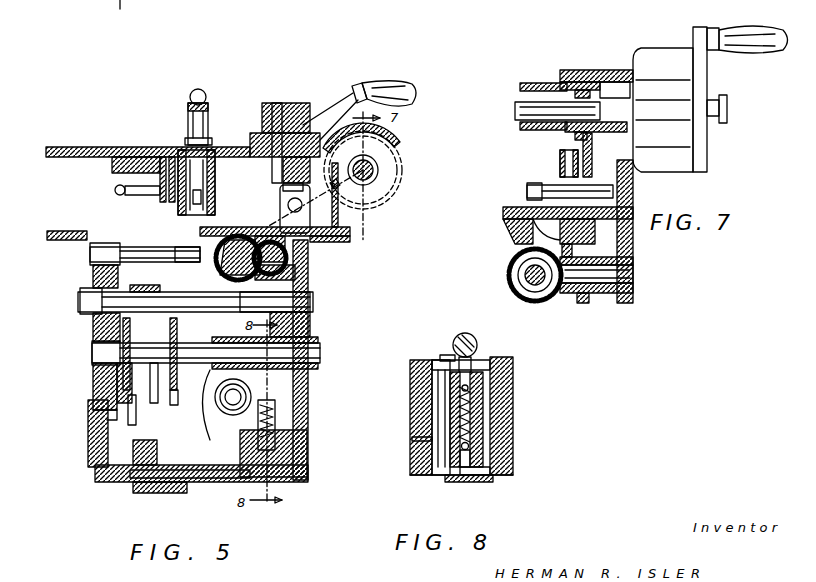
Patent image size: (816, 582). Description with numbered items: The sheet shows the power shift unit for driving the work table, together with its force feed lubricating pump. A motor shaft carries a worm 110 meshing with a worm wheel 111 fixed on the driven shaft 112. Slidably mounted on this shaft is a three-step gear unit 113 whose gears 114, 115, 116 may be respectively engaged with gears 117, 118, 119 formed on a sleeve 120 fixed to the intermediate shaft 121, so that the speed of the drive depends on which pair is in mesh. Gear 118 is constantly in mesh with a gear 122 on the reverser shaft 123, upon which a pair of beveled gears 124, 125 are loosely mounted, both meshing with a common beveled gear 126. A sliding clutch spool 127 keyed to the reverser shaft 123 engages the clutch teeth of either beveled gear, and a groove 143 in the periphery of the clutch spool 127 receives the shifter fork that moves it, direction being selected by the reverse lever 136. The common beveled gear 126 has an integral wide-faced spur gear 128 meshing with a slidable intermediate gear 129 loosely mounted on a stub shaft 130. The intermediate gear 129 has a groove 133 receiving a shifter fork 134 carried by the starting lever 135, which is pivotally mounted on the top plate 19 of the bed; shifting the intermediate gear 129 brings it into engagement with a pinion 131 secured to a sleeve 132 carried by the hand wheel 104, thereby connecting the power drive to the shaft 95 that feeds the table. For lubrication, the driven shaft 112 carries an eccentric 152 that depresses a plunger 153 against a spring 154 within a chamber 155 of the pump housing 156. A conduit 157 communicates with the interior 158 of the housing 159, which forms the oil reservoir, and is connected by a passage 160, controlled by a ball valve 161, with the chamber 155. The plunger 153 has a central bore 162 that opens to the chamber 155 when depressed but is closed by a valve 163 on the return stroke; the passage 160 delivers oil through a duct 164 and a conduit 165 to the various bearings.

In FIG. 5, the top plate 19 is at (222, 148).
In FIG. 5, the reverse lever 136 is at (212, 80).
In FIG. 5, the starting lever 135 is at (340, 100).
In FIG. 5, the pinion 131 is at (390, 162).
In FIG. 7, the pinion 131 is at (575, 136).
In FIG. 5, the common beveled gear 126 is at (280, 190).
In FIG. 7, the common beveled gear 126 is at (562, 295).
In FIG. 5, the beveled gear 124 is at (228, 238).
In FIG. 5, the shifter fork 134 is at (338, 188).
In FIG. 7, the shifter fork 134 is at (560, 157).
In FIG. 5, the intermediate gear 129 is at (330, 212).
In FIG. 7, the intermediate gear 129 is at (592, 150).
In FIG. 5, the gear 122 is at (198, 250).
In FIG. 5, the reverser shaft 123 is at (90, 252).
In FIG. 7, the reverser shaft 123 is at (525, 275).
In FIG. 5, the beveled gear 125 is at (288, 258).
In FIG. 7, the beveled gear 125 is at (513, 288).
In FIG. 5, the sliding clutch spool 127 is at (295, 276).
In FIG. 5, the gear 117 is at (126, 296).
In FIG. 5, the gear 118 is at (178, 296).
In FIG. 5, the intermediate shaft 121 is at (300, 302).
In FIG. 5, the groove 143 is at (285, 318).
In FIG. 5, the gear 119 is at (186, 318).
In FIG. 5, the sleeve 120 is at (93, 328).
In FIG. 5, the driven shaft 112 is at (320, 352).
In FIG. 8, the driven shaft 112 is at (452, 352).
In FIG. 5, the gear 114 is at (120, 383).
In FIG. 5, the gear 115 is at (137, 390).
In FIG. 5, the three-step gear unit 113 is at (158, 372).
In FIG. 5, the gear 116 is at (176, 385).
In FIG. 5, the worm wheel 111 is at (225, 397).
In FIG. 5, the worm 110 is at (232, 410).
In FIG. 5, the housing 159 is at (97, 478).
In FIG. 5, the interior 158 is at (207, 462).
In FIG. 7, the hand wheel 104 is at (668, 65).
In FIG. 7, the sleeve 132 is at (610, 95).
In FIG. 7, the shaft 95 is at (513, 110).
In FIG. 7, the stub shaft 130 is at (527, 191).
In FIG. 7, the groove 133 is at (553, 223).
In FIG. 7, the spur gear 128 is at (596, 293).
In FIG. 8, the spring 154 is at (440, 428).
In FIG. 8, the conduit 165 is at (450, 410).
In FIG. 8, the plunger 153 is at (470, 370).
In FIG. 8, the chamber 155 is at (480, 412).
In FIG. 8, the central bore 162 is at (472, 392).
In FIG. 8, the valve 163 is at (468, 390).
In FIG. 8, the ball valve 161 is at (470, 440).
In FIG. 8, the passage 160 is at (470, 455).
In FIG. 8, the pump housing 156 is at (480, 470).
In FIG. 8, the conduit 157 is at (468, 482).
In FIG. 8, the eccentric 152 is at (478, 343).
In FIG. 8, the duct 164 is at (450, 357).